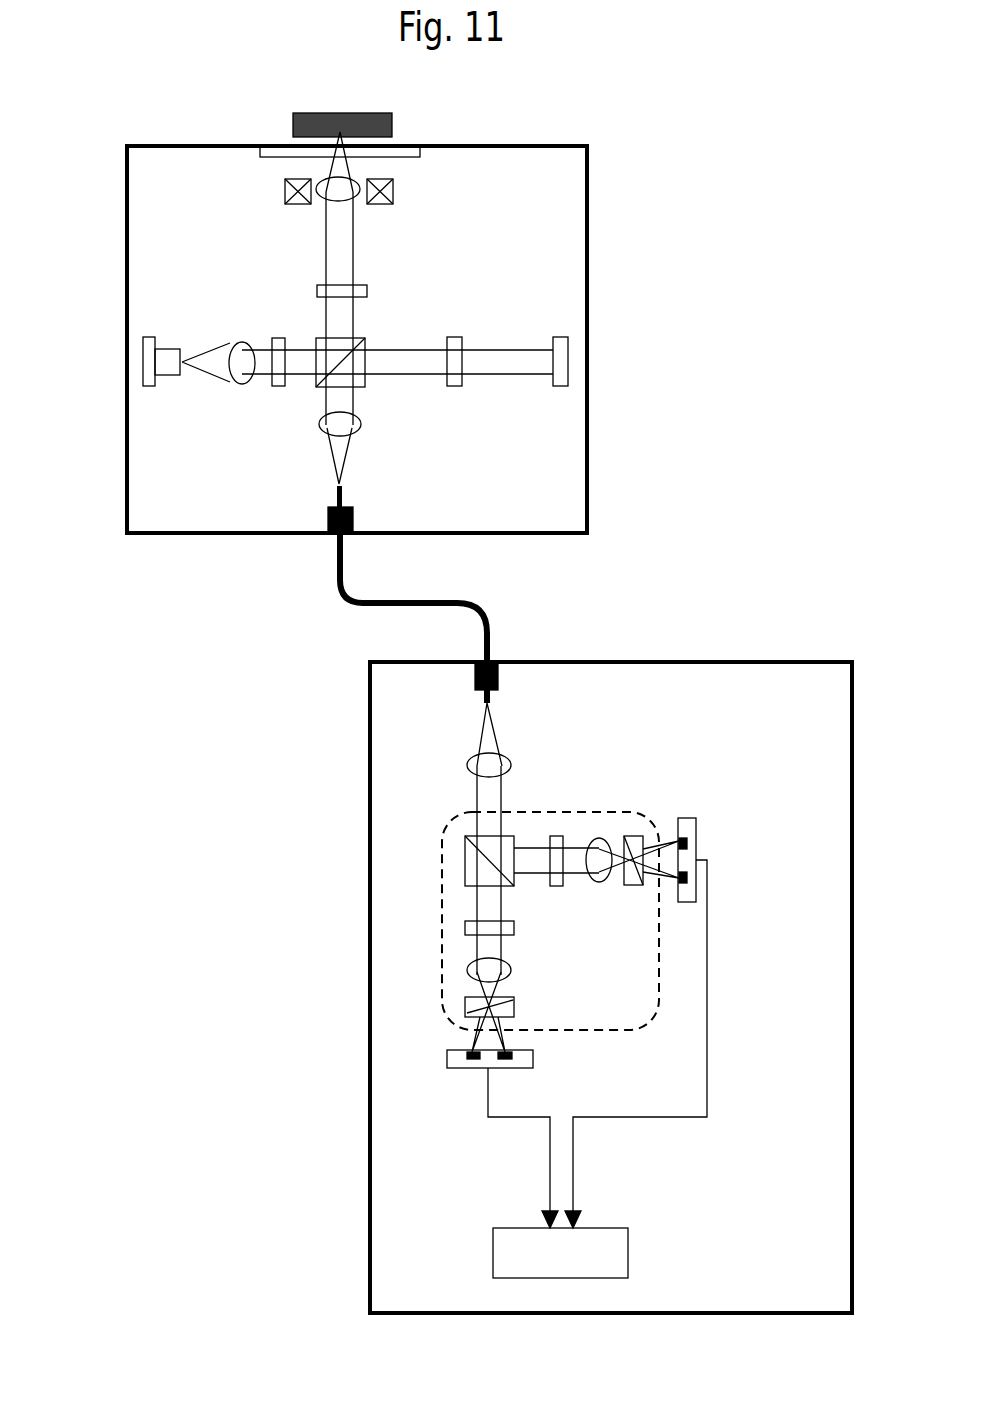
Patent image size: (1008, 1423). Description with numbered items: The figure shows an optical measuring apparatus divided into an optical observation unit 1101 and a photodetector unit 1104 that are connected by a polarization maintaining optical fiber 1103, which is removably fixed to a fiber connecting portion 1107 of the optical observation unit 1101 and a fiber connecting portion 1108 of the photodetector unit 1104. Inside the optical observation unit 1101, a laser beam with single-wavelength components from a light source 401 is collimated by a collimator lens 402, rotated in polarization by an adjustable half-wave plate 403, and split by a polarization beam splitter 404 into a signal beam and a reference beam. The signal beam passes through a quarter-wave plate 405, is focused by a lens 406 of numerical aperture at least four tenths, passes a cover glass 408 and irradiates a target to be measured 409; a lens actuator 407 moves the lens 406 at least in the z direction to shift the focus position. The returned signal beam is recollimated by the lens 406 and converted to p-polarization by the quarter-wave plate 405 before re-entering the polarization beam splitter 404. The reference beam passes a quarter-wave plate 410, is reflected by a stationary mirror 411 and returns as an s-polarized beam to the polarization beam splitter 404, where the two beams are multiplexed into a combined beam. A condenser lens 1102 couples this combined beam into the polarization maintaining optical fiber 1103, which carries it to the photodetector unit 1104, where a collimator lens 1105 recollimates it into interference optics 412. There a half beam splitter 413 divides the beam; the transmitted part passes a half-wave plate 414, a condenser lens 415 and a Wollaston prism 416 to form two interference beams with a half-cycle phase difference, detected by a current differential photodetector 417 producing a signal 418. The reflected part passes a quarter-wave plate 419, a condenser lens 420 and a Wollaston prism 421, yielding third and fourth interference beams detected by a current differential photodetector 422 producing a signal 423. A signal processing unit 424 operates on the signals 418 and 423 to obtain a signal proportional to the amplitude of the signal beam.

The light source 401 is at (142, 353).
The collimator lens 402 is at (233, 342).
The λ/2 plate 403 is at (276, 388).
The polarization beam splitter 404 is at (316, 340).
The λ/4 plate 405 is at (317, 290).
The lens 406 is at (353, 197).
The lens actuator 407 is at (396, 188).
The cover glass 408 is at (268, 157).
The target to be measured 409 is at (293, 122).
The λ/4 plate 410 is at (452, 335).
The stationary mirror 411 is at (560, 335).
The interference optics 412 is at (645, 1027).
The half beam splitter 413 is at (465, 859).
The λ/2 plate 414 is at (515, 928).
The condenser lens 415 is at (512, 970).
The Wollaston prism 416 is at (515, 1007).
The current differential photodetector 417 is at (534, 1058).
The signal 418 is at (489, 1092).
The λ/4 plate 419 is at (557, 836).
The condenser lens 420 is at (600, 838).
The Wollaston prism 421 is at (637, 836).
The current differential photodetector 422 is at (690, 818).
The signal 423 is at (708, 872).
The signal processing unit 424 is at (610, 1228).
The optical observation unit 1101 is at (126, 508).
The condenser lens 1102 is at (362, 424).
The polarization maintaining optical fiber 1103 is at (338, 580).
The photodetector unit 1104 is at (692, 660).
The collimator lens 1105 is at (470, 763).
The fiber connecting portion 1107 is at (328, 520).
The fiber connecting portion 1108 is at (498, 676).